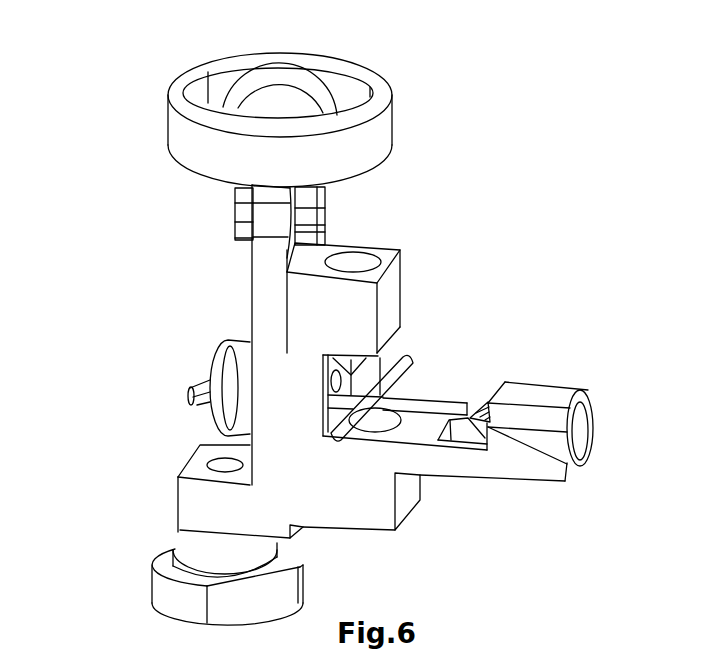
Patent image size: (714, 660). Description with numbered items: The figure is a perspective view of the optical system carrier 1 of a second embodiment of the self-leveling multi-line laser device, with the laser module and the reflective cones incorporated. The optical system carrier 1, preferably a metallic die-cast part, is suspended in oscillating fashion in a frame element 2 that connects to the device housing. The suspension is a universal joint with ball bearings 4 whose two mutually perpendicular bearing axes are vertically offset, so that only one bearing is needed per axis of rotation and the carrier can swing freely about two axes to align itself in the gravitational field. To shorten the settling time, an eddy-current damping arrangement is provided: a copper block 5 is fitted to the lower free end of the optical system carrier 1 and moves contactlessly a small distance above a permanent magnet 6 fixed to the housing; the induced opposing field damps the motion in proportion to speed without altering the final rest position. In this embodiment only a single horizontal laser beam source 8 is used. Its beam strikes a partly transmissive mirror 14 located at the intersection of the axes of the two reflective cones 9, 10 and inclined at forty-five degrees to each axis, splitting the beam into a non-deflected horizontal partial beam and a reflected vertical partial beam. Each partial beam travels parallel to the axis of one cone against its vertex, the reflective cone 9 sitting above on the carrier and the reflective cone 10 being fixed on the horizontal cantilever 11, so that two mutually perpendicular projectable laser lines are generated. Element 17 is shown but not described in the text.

The optical system carrier 1 is at (267, 297).
The frame element 2 is at (368, 138).
The ball bearings 4 is at (310, 80).
The copper block 5 is at (187, 543).
The permanent magnet 6 is at (178, 595).
The horizontal laser beam source 8 is at (230, 407).
The reflective cone 9 is at (380, 357).
The reflective cone 10 is at (488, 428).
The horizontal cantilever 11 is at (523, 470).
The partly transmissive mirror 14 is at (378, 395).
The wedge 17 is at (490, 411).